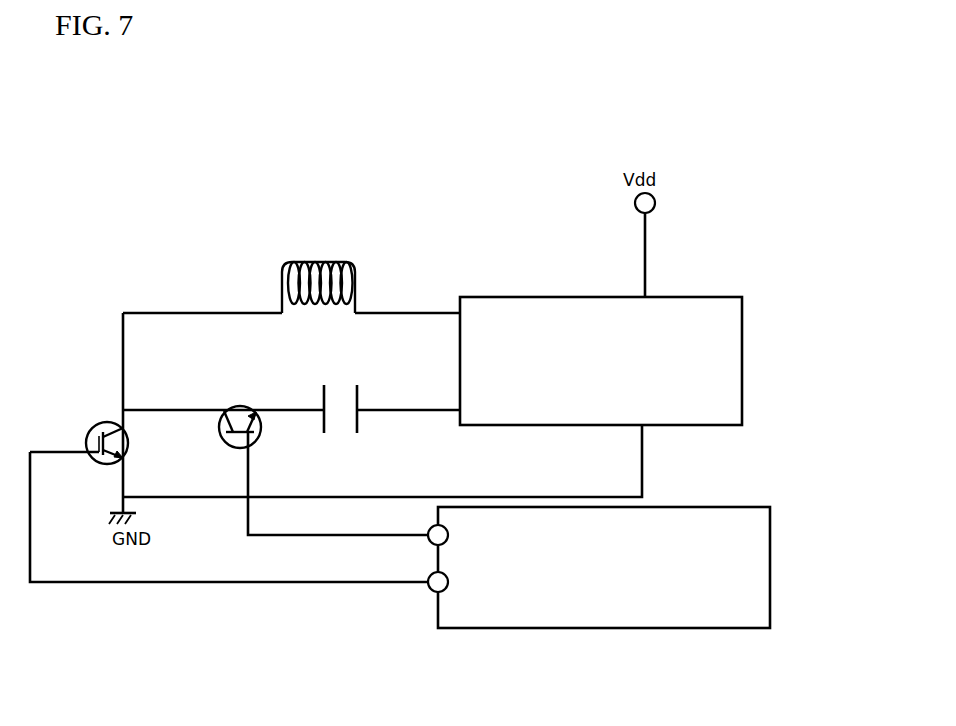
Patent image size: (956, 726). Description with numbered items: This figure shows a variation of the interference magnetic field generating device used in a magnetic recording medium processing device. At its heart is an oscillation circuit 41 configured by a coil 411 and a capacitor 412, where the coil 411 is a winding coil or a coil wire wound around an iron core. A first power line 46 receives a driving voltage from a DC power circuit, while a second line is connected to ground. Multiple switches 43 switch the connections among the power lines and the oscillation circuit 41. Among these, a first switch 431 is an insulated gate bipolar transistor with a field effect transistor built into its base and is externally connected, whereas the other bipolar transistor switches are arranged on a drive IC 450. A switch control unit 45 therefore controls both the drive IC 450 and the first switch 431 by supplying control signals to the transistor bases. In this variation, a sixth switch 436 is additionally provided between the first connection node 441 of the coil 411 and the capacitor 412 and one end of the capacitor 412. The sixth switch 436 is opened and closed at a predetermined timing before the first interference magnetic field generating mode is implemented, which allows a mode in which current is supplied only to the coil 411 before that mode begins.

The oscillation circuit 41 is at (268, 232).
The coil 411 is at (283, 264).
The capacitor 412 is at (322, 402).
The switches 43 is at (222, 440).
The first switch 431 is at (128, 440).
The sixth switch 436 is at (258, 435).
The first connection node 441 is at (123, 403).
The switch control unit 45 is at (568, 628).
The drive IC 450 is at (533, 297).
The first power line 46 is at (645, 250).